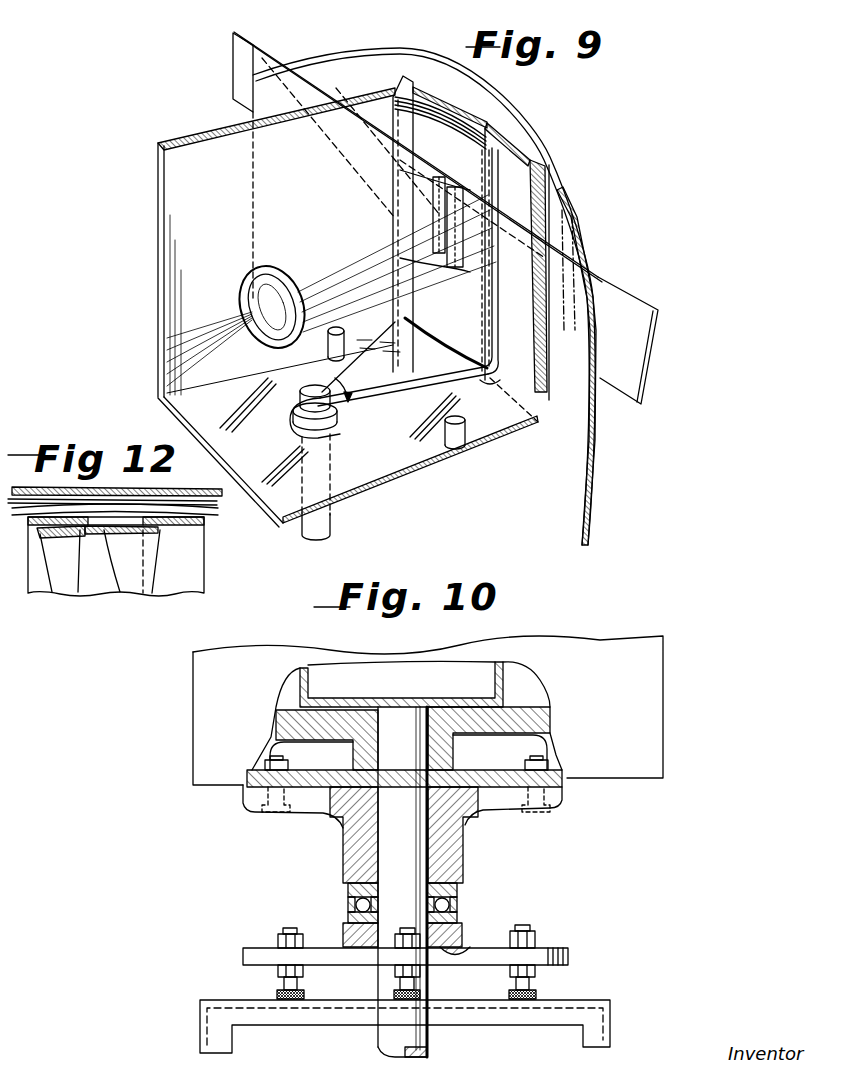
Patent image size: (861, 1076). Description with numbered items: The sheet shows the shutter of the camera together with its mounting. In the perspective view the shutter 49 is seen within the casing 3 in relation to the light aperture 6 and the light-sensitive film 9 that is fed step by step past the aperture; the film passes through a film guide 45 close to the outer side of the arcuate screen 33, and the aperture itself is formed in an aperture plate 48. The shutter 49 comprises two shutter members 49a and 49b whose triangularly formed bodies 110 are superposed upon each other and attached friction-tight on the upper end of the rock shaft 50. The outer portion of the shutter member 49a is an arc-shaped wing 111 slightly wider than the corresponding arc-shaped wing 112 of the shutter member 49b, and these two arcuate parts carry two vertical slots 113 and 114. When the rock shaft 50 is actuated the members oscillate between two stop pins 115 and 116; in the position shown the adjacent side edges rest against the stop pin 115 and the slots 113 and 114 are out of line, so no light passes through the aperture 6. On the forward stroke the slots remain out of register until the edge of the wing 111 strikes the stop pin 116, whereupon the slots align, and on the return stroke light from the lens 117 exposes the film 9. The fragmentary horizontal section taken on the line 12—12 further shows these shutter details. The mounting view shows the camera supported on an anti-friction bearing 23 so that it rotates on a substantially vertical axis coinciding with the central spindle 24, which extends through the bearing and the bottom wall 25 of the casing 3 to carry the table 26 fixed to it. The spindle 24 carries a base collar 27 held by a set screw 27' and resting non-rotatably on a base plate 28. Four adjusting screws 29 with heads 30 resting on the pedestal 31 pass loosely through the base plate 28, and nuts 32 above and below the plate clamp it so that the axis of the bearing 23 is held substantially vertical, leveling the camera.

In FIG. 10, the casing 3 is at (657, 687).
In FIG. 12, the light aperture 6 is at (128, 517).
In FIG. 9, the light-sensitive film 9 is at (630, 302).
In FIG. 9, the section line 12 is at (507, 275).
In FIG. 10, the anti-friction bearing 23 is at (468, 892).
In FIG. 10, the central spindle 24 is at (418, 851).
In FIG. 10, the bottom wall 25 is at (483, 770).
In FIG. 10, the table 26 is at (535, 708).
In FIG. 10, the base collar 27 is at (468, 928).
In FIG. 10, the set screw 27' is at (340, 925).
In FIG. 10, the base plate 28 is at (248, 957).
In FIG. 10, the adjusting screws 29 is at (287, 934).
In FIG. 10, the heads 30 is at (537, 988).
In FIG. 10, the pedestal 31 is at (590, 995).
In FIG. 10, the nuts 32 is at (535, 937).
In FIG. 9, the arcuate screen 33 is at (567, 453).
In FIG. 12, the film guide 45 is at (170, 489).
In FIG. 12, the aperture plate 48 is at (200, 520).
In FIG. 9, the shutter 49 is at (423, 383).
In FIG. 12, the shutter 49 is at (150, 559).
In FIG. 9, the shutter member 49a is at (490, 177).
In FIG. 12, the shutter member 49a is at (50, 580).
In FIG. 9, the shutter member 49b is at (480, 125).
In FIG. 12, the shutter member 49b is at (33, 565).
In FIG. 9, the rock shaft 50 is at (332, 521).
In FIG. 9, the triangularly formed bodies 110 is at (367, 400).
In FIG. 9, the arc-shaped wing 111 is at (500, 140).
In FIG. 9, the arc-shaped wing 112 is at (453, 110).
In FIG. 9, the slot 113 is at (457, 213).
In FIG. 12, the slot 113 is at (78, 592).
In FIG. 9, the slot 114 is at (440, 200).
In FIG. 12, the slot 114 is at (120, 592).
In FIG. 9, the stop pin 115 is at (334, 352).
In FIG. 9, the stop pin 116 is at (465, 432).
In FIG. 9, the lens 117 is at (247, 283).